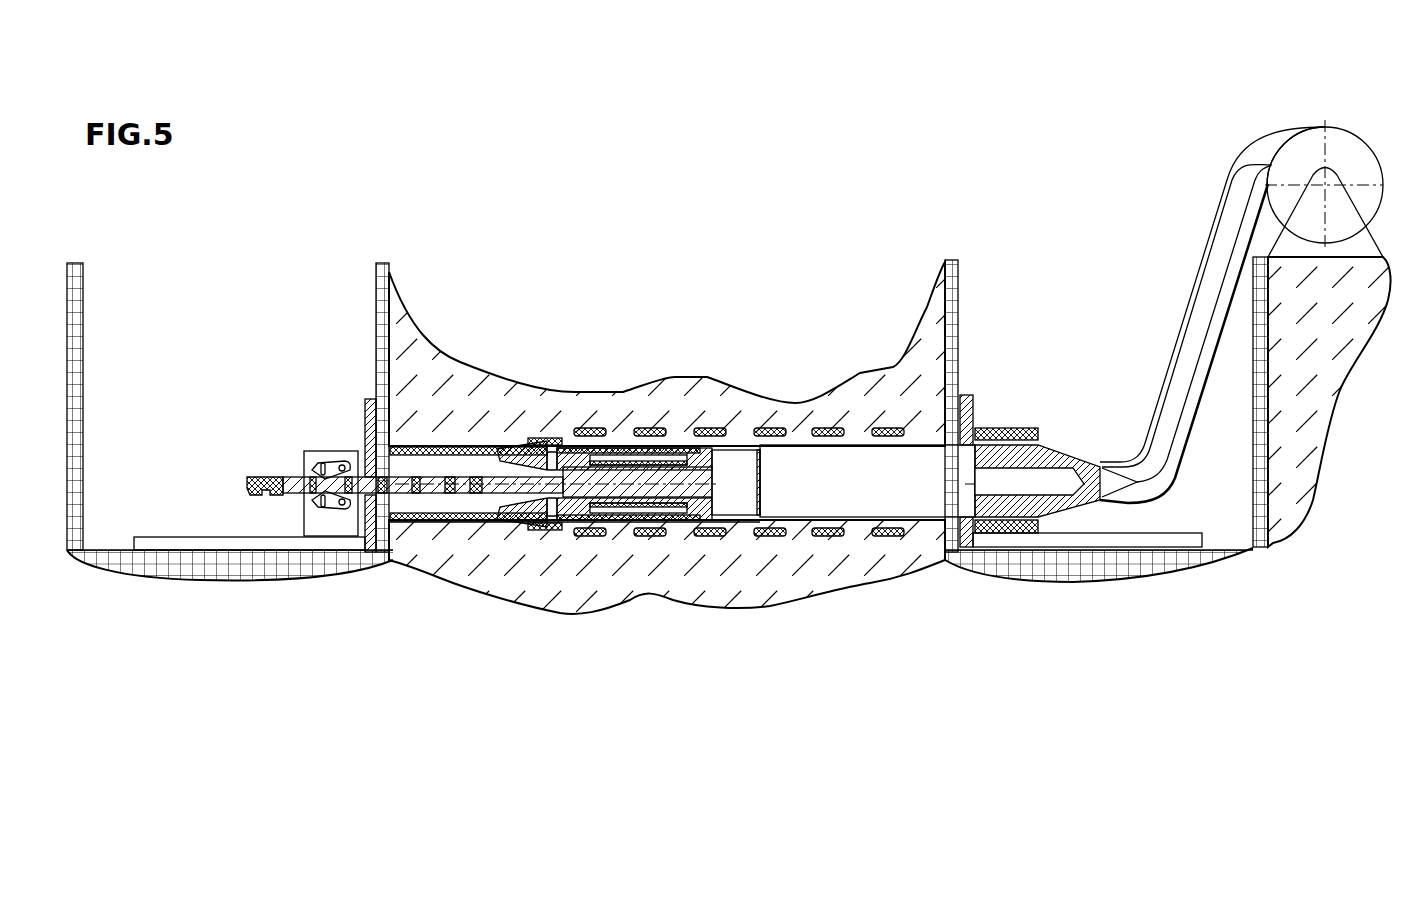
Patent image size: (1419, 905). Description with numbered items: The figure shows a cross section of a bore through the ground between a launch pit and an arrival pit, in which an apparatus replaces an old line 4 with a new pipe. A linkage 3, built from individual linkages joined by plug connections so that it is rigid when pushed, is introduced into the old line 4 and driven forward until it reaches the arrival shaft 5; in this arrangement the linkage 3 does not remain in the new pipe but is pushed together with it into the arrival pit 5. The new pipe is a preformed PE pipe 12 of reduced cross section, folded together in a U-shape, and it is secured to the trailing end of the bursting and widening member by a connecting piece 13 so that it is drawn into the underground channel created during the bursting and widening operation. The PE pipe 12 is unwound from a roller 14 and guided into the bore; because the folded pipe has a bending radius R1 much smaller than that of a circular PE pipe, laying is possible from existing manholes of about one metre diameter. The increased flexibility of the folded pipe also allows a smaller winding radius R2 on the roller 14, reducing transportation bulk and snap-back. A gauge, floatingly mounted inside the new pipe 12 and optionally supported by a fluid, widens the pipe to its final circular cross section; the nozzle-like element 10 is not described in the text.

The linkage 3 is at (432, 483).
The old line 4 is at (450, 513).
The arrival shaft 5 is at (320, 178).
The nozzle 10 is at (1043, 460).
The PE pipe 12 is at (860, 445).
The connecting piece 13 is at (632, 457).
The roller 14 is at (1362, 168).
The bending radius R1 is at (1132, 453).
The winding radius R2 is at (1327, 183).